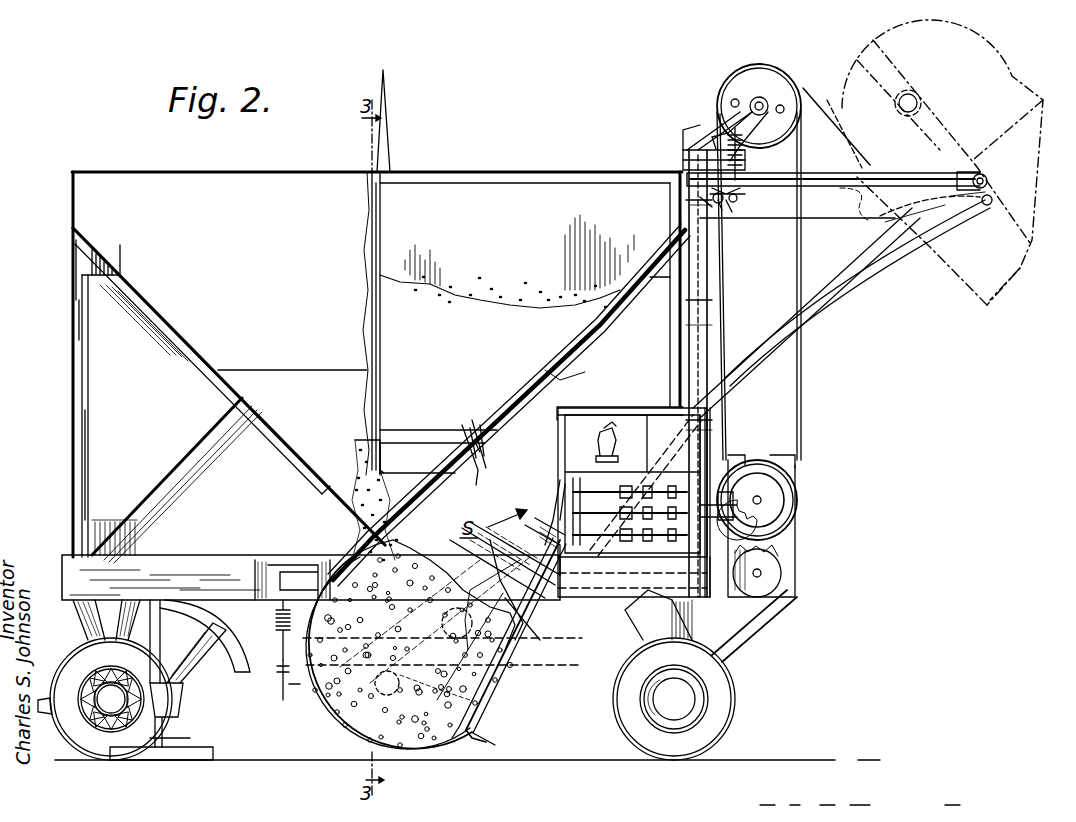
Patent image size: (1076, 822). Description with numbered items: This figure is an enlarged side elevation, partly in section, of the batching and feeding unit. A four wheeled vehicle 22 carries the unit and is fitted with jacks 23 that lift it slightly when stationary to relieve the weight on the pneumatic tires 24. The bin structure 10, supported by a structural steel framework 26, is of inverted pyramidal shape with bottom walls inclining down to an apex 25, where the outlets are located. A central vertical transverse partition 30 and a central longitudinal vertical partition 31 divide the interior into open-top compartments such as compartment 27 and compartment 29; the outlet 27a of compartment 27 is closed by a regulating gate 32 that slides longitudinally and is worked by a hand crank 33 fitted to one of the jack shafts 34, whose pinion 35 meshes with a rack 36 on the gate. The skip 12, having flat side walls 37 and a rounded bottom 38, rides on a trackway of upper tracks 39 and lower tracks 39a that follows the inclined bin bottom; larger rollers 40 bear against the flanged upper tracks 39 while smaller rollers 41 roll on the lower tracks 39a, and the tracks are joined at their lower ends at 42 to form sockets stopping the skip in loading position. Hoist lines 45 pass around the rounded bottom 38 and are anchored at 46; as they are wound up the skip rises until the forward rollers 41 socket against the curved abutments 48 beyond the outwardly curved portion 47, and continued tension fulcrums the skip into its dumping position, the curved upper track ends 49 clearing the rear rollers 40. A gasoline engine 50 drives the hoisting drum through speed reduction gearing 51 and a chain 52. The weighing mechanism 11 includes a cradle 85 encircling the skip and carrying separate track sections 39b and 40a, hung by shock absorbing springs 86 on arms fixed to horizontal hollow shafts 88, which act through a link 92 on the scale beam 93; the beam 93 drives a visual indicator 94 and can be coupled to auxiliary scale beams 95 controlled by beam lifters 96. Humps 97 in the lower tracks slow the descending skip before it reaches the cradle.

The bin structure 10 is at (192, 318).
The weighing mechanism 11 is at (722, 430).
The skip 12 is at (1012, 80).
The vehicle 22 is at (248, 662).
The jacks 23 is at (180, 736).
The pneumatic tires 24 is at (80, 727).
The apex 25 is at (364, 544).
The structural steel framework 26 is at (150, 492).
The compartment 27 is at (355, 488).
The outlet 27a is at (395, 515).
The compartment 29 is at (560, 330).
The central vertical transverse partition 30 is at (385, 220).
The central longitudinal vertical partition 31 is at (372, 340).
The regulating gate 32 is at (444, 482).
The hand crank 33 is at (474, 468).
The jack shafts 34 is at (480, 428).
The pinion 35 is at (478, 454).
The rack 36 is at (540, 393).
The side walls 37 is at (482, 562).
The rounded bottom 38 is at (318, 700).
The upper tracks 39 is at (540, 535).
The lower tracks 39a is at (620, 567).
The separate lower track section 39b is at (458, 575).
The rollers 40 is at (345, 715).
The separate lower track section 40a is at (478, 692).
The rollers 41 is at (490, 678).
The joined track ends 42 is at (440, 738).
The hoisting lines 45 is at (816, 106).
The anchor point 46 is at (470, 728).
The curved track portion 47 is at (942, 203).
The curved abutments 48 is at (990, 181).
The curved upper track ends 49 is at (858, 200).
The gasoline engine 50 is at (798, 478).
The speed reduction gearing 51 is at (785, 540).
The chain 52 is at (798, 241).
The cradle 85 is at (282, 668).
The shock absorbing springs 86 is at (275, 606).
The horizontal hollow shafts 88 is at (303, 562).
The link 92 is at (698, 556).
The scale beam 93 is at (662, 472).
The visual indicator 94 is at (599, 440).
The auxiliary scale beams 95 is at (680, 458).
The beam lifters 96 is at (560, 490).
The humps 97 is at (510, 636).